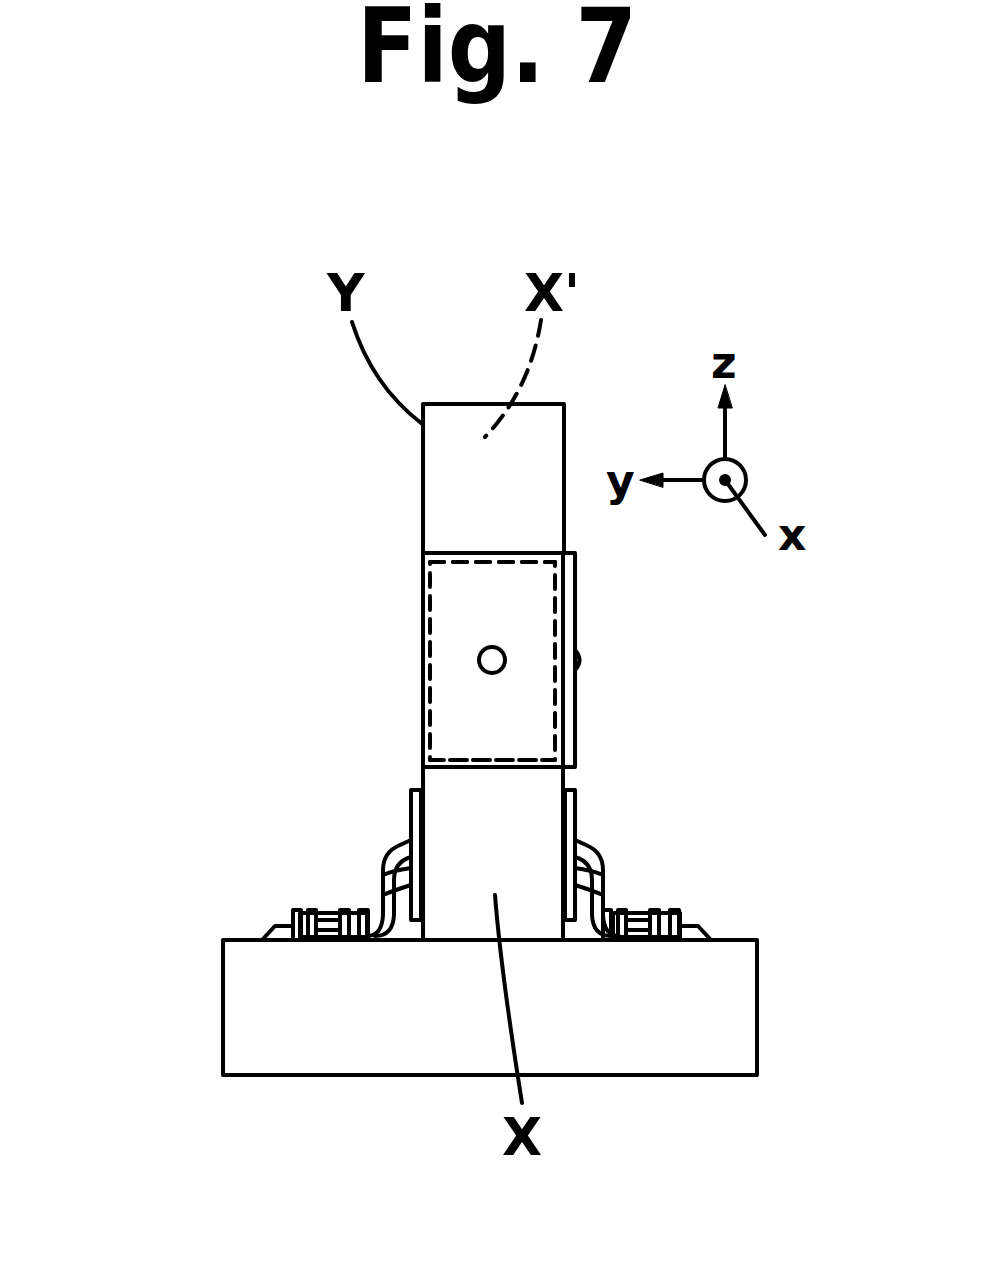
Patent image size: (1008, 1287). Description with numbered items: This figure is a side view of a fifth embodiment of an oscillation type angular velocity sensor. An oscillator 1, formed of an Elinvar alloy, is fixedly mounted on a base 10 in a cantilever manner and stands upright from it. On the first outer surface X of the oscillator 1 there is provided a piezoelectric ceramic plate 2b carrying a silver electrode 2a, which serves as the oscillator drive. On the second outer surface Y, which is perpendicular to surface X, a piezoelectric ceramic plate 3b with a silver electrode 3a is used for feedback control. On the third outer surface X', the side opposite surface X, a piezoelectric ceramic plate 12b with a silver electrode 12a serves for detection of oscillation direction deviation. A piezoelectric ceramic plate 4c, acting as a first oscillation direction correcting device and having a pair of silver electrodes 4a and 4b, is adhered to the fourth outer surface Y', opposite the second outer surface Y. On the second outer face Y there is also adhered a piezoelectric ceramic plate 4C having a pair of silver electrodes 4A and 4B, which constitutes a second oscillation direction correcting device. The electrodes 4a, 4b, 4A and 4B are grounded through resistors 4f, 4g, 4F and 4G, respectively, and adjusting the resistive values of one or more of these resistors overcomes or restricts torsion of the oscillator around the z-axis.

The oscillator 1 is at (421, 465).
The silver electrode 2a is at (445, 600).
The piezoelectric ceramic plate 2b is at (423, 553).
The silver electrode 12a is at (445, 707).
The piezoelectric ceramic plate 12b is at (423, 648).
The silver electrode 3a is at (577, 617).
The piezoelectric ceramic plate 3b is at (575, 555).
The silver electrode 4a is at (253, 857).
The silver electrode 4b is at (405, 832).
The piezoelectric ceramic plate 4c is at (415, 792).
The resistor 4f is at (292, 928).
The resistor 4g is at (327, 916).
The silver electrode 4A is at (731, 852).
The silver electrode 4B is at (577, 833).
The piezoelectric ceramic plate 4C is at (575, 790).
The resistor 4F is at (672, 918).
The resistor 4G is at (633, 916).
The base 10 is at (223, 1000).